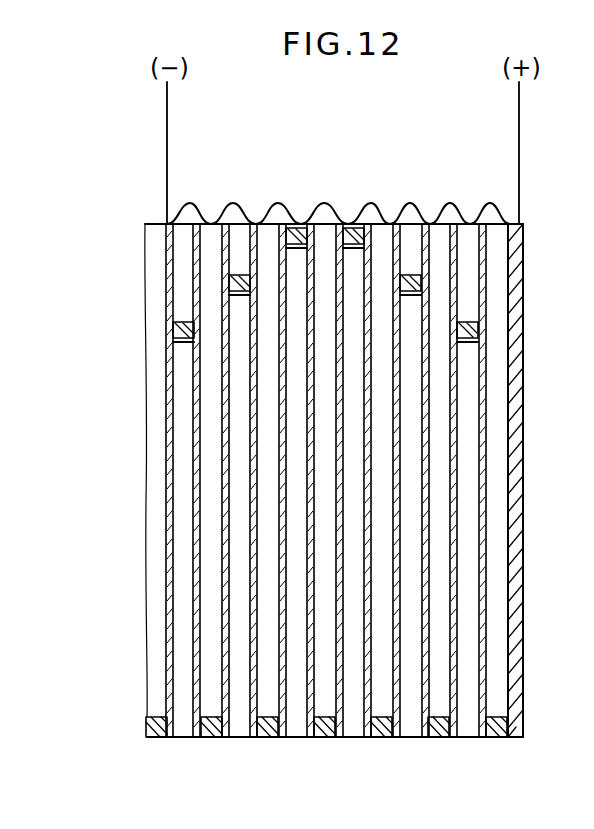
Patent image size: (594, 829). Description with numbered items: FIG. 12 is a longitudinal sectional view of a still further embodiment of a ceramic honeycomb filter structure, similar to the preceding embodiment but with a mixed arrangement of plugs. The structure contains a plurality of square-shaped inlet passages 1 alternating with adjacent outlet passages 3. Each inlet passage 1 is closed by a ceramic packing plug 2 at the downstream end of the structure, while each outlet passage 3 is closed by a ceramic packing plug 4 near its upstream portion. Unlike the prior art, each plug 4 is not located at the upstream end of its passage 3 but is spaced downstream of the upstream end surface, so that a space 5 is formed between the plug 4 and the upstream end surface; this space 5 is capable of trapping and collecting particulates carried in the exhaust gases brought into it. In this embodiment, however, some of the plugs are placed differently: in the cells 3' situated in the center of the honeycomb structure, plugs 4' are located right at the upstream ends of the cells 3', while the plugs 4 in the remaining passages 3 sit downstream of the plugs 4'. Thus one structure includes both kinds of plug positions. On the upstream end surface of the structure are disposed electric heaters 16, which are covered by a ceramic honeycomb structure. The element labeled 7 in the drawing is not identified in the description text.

The inlet passage 1 is at (497, 437).
The ceramic packing plug 2 is at (440, 733).
The outlet passage 3 is at (481, 480).
The cell 3' is at (272, 503).
The ceramic packing plug 4 is at (333, 242).
The plug 4' is at (312, 195).
The space 5 is at (463, 240).
The end wall 7 is at (487, 500).
The electric heater 16 is at (487, 238).